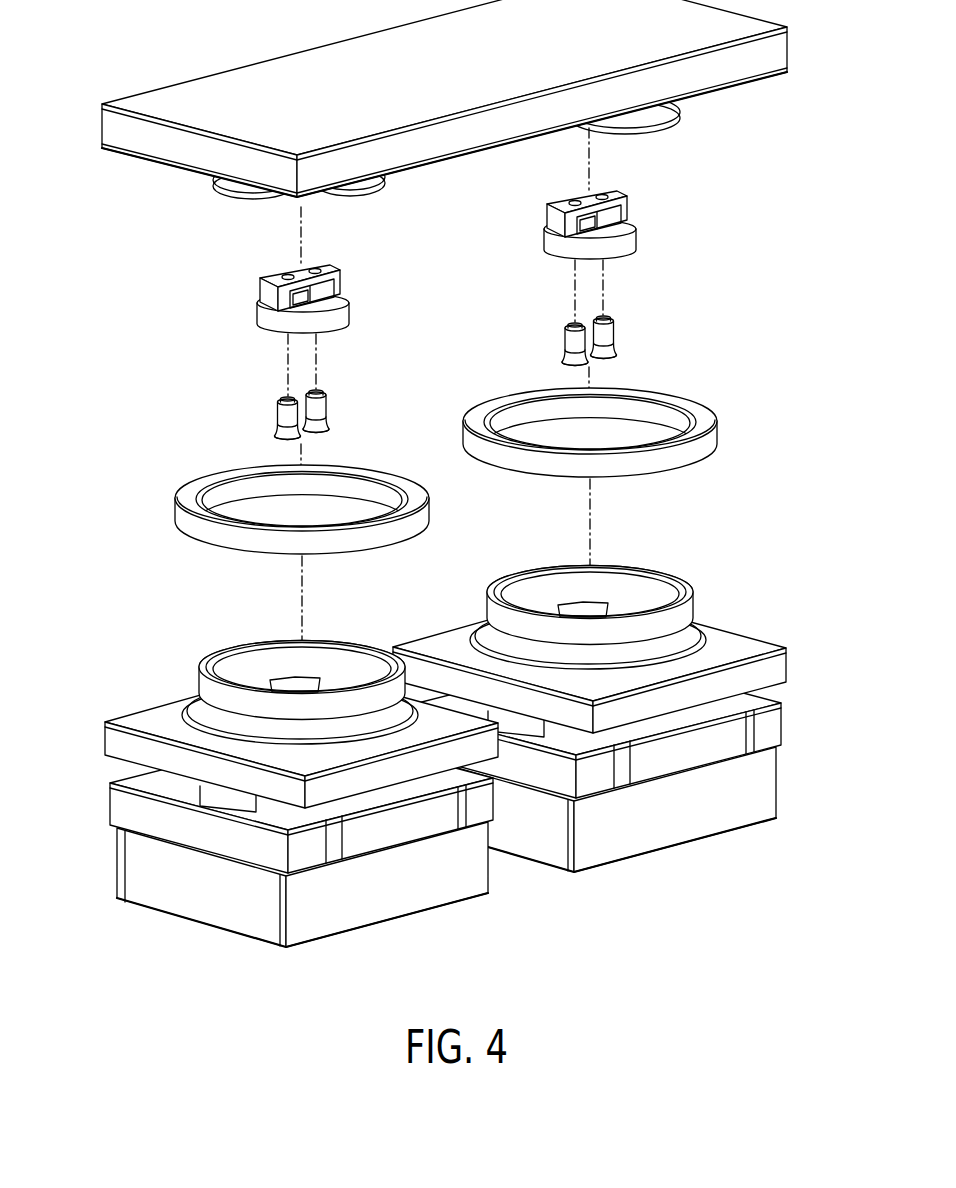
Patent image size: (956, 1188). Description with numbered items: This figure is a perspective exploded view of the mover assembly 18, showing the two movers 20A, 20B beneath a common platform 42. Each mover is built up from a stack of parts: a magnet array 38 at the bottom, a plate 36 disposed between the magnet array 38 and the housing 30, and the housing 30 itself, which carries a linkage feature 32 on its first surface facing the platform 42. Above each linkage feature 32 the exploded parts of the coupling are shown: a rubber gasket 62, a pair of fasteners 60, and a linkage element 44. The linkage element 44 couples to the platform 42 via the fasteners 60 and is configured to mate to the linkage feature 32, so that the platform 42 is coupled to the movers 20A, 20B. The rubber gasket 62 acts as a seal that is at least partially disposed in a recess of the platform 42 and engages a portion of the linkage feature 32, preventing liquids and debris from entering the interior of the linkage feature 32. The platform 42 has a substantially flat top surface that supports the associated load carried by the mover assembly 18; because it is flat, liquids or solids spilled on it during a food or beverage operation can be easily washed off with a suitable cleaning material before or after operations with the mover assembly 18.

The mover assembly 18 is at (120, 195).
The platform 42 is at (130, 96).
The linkage element 44 is at (246, 278).
The fasteners 60 is at (276, 403).
The rubber gasket 62 is at (177, 503).
The mover 20A is at (141, 641).
The mover 20B is at (799, 623).
The linkage feature 32 is at (191, 676).
The housing 30 is at (103, 733).
The plate 36 is at (112, 803).
The magnet array 38 is at (112, 866).